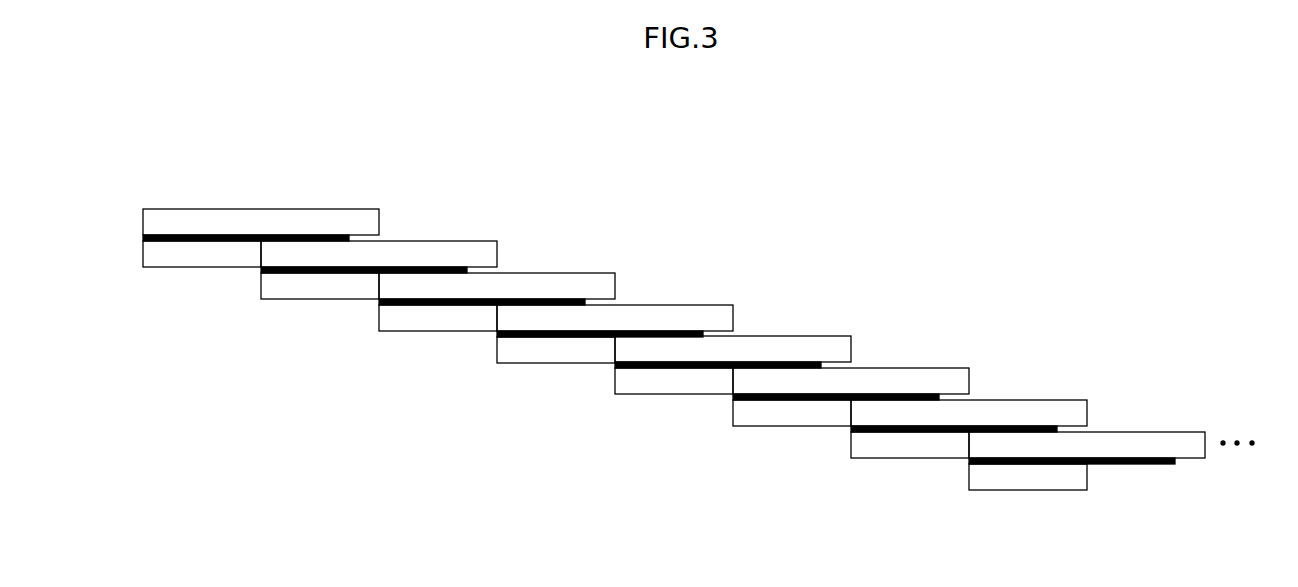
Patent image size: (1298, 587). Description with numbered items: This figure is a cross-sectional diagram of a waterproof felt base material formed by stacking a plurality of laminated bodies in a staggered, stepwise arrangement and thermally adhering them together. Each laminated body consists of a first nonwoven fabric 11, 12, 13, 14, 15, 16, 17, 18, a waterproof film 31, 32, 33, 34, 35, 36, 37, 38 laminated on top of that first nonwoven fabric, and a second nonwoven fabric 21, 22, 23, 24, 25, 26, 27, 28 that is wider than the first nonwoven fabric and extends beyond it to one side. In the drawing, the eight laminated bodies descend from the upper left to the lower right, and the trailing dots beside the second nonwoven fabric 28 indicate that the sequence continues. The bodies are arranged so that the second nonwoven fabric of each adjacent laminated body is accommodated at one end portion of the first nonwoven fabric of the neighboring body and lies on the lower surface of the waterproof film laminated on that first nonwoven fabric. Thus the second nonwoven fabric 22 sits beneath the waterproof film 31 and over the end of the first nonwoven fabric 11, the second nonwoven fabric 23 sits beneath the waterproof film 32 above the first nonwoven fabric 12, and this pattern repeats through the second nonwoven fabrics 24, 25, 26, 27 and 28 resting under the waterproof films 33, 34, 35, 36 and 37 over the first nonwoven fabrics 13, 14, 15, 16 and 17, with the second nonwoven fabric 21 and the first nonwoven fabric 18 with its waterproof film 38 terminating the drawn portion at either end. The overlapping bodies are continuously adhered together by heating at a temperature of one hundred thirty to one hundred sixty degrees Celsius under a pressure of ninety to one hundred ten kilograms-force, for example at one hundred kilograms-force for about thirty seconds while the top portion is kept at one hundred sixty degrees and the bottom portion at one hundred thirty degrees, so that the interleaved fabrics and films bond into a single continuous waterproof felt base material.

The first nonwoven fabric 11 is at (158, 259).
The first nonwoven fabric 12 is at (276, 291).
The first nonwoven fabric 13 is at (394, 323).
The first nonwoven fabric 14 is at (512, 355).
The first nonwoven fabric 15 is at (630, 386).
The first nonwoven fabric 16 is at (748, 418).
The first nonwoven fabric 17 is at (866, 450).
The first nonwoven fabric 18 is at (984, 482).
The second nonwoven fabric 21 is at (368, 220).
The second nonwoven fabric 22 is at (486, 252).
The second nonwoven fabric 23 is at (604, 284).
The second nonwoven fabric 24 is at (722, 316).
The second nonwoven fabric 25 is at (840, 347).
The second nonwoven fabric 26 is at (958, 379).
The second nonwoven fabric 27 is at (1076, 411).
The second nonwoven fabric 28 is at (1194, 443).
The waterproof film 31 is at (143, 239).
The waterproof film 32 is at (261, 271).
The waterproof film 33 is at (379, 303).
The waterproof film 34 is at (497, 335).
The waterproof film 35 is at (615, 366).
The waterproof film 36 is at (733, 398).
The waterproof film 37 is at (851, 430).
The waterproof film 38 is at (969, 462).